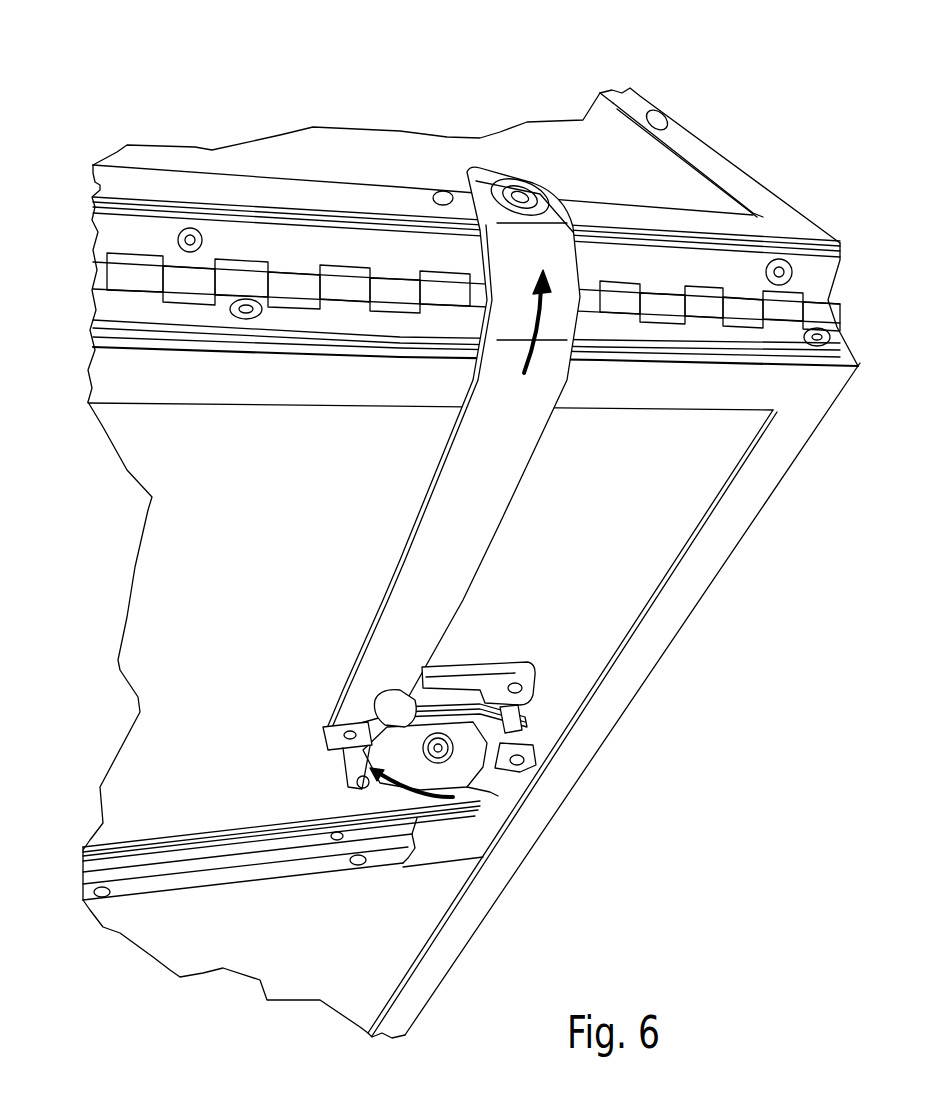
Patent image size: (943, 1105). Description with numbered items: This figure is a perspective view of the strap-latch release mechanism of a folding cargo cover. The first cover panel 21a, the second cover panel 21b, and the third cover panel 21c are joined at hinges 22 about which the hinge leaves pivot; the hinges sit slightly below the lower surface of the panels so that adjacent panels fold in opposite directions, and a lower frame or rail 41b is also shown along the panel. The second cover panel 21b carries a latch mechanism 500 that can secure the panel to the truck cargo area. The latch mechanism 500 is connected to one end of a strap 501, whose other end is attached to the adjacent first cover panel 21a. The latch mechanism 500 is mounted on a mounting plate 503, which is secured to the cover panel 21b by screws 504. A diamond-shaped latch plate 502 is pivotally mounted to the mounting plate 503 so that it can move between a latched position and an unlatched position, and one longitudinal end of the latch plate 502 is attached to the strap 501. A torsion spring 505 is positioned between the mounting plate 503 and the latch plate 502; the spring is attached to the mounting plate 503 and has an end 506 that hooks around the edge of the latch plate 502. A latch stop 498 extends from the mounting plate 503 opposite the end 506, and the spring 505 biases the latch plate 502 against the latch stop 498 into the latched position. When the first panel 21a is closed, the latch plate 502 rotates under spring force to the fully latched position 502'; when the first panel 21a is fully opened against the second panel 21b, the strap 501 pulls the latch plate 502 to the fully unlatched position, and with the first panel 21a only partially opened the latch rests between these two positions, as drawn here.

The first cover panel 21a is at (533, 140).
The second cover panel 21b is at (700, 592).
The third cover panel 21c is at (468, 932).
The hinge 22 is at (823, 311).
The lower rail 41b is at (83, 872).
The latch stop 498 is at (515, 720).
The latch mechanism 500 is at (482, 808).
The strap 501 is at (440, 513).
The latch plate 502 is at (521, 771).
The fully latched position 502' is at (348, 659).
The mounting plate 503 is at (445, 680).
The screws 504 is at (517, 688).
The torsion spring 505 is at (487, 706).
The spring end 506 is at (497, 795).